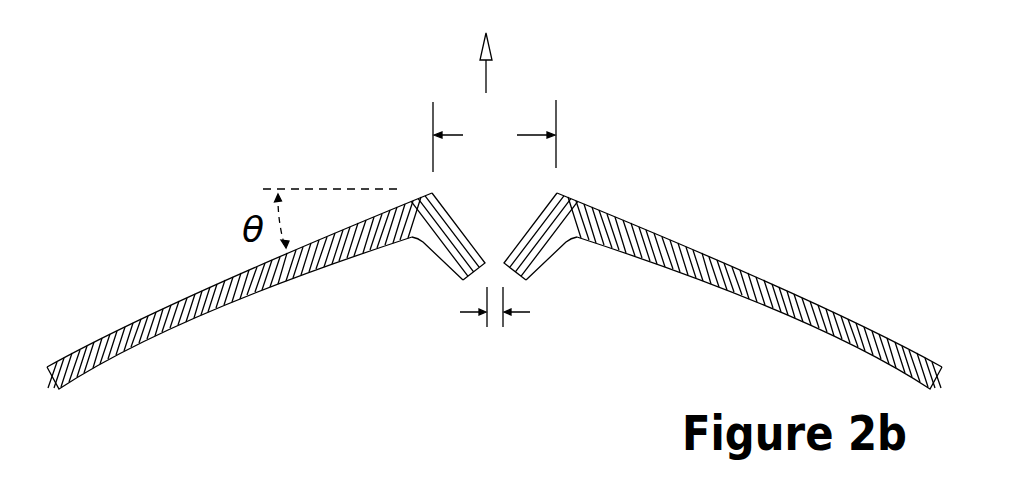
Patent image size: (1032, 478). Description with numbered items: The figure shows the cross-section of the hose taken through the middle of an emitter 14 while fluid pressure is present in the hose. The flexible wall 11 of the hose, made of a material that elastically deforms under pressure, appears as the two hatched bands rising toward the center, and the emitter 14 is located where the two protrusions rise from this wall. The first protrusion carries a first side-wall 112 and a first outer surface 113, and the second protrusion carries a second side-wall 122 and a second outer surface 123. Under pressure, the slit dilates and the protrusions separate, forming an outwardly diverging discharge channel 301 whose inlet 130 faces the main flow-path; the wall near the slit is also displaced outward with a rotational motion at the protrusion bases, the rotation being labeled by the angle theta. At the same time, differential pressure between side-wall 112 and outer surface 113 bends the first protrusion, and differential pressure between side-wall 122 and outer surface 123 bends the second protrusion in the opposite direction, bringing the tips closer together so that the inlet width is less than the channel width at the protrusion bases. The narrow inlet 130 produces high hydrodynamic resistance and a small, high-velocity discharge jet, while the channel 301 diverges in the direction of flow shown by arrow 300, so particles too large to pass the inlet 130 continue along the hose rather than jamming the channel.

The flexible wall 11 is at (660, 236).
The emitter 14 is at (382, 135).
The first side-wall 112 is at (447, 221).
The first outer surface 113 is at (422, 242).
The second side-wall 122 is at (543, 222).
The second outer surface 123 is at (553, 245).
The inlet 130 is at (497, 270).
The arrow 300 is at (488, 82).
The discharge channel 301 is at (512, 232).